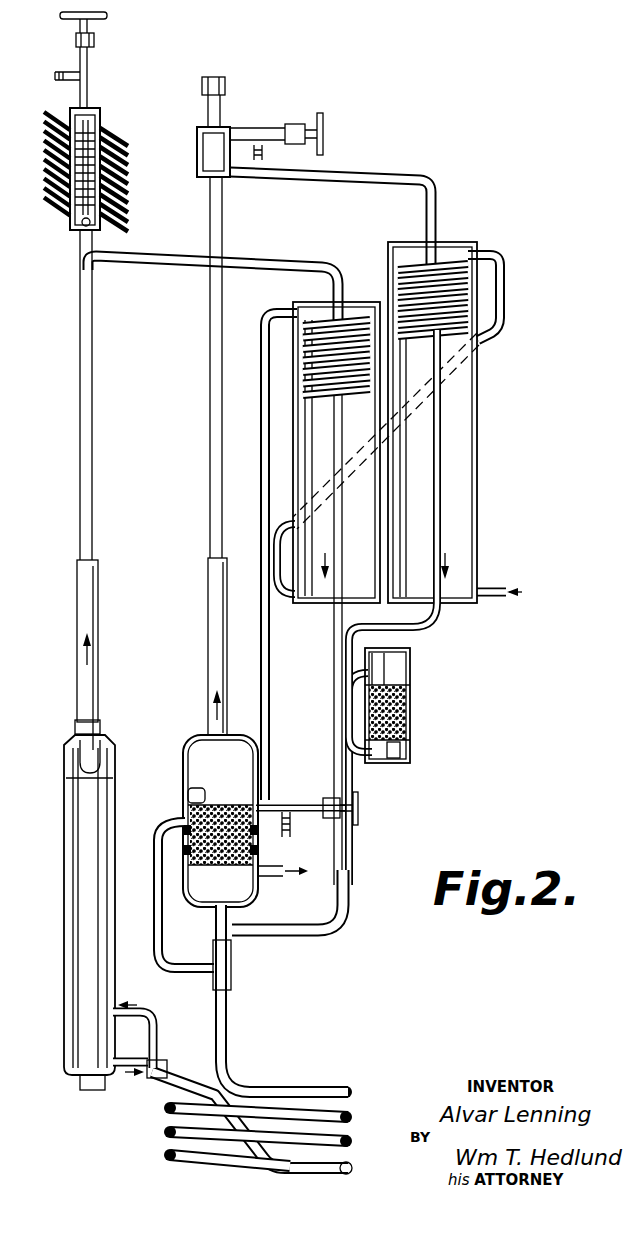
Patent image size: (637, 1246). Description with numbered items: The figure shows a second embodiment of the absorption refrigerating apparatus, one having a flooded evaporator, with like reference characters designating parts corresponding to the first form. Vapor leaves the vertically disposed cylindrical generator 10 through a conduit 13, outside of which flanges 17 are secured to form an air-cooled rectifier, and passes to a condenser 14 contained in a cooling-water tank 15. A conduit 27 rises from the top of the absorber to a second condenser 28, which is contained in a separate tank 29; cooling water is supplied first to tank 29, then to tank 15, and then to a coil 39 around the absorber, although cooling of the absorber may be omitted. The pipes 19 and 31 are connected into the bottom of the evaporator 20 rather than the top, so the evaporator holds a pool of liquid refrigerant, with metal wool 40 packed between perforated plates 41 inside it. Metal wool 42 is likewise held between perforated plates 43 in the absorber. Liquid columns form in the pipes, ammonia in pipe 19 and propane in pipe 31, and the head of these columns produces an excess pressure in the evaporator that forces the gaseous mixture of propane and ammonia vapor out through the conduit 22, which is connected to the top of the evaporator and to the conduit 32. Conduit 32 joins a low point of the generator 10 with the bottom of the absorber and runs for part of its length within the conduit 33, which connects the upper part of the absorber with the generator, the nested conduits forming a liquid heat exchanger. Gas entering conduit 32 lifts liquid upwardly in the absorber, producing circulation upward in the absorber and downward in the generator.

The generator 10 is at (63, 850).
The conduit 13 is at (80, 430).
The condenser 14 is at (353, 328).
The tank 15 is at (295, 437).
The flanges 17 is at (57, 204).
The conduit 19 is at (336, 517).
The evaporator 20 is at (411, 756).
The conduit 22 is at (332, 917).
The conduit 27 is at (212, 395).
The second condenser 28 is at (449, 268).
The tank 29 is at (479, 446).
The conduit 31 is at (441, 527).
The conduit 32 is at (218, 913).
The conduit 33 is at (188, 969).
The coil 39 is at (259, 822).
The metal wool 40 is at (393, 680).
The perforated plates 41 is at (401, 737).
The metal wool 42 is at (232, 853).
The perforated plates 43 is at (187, 797).